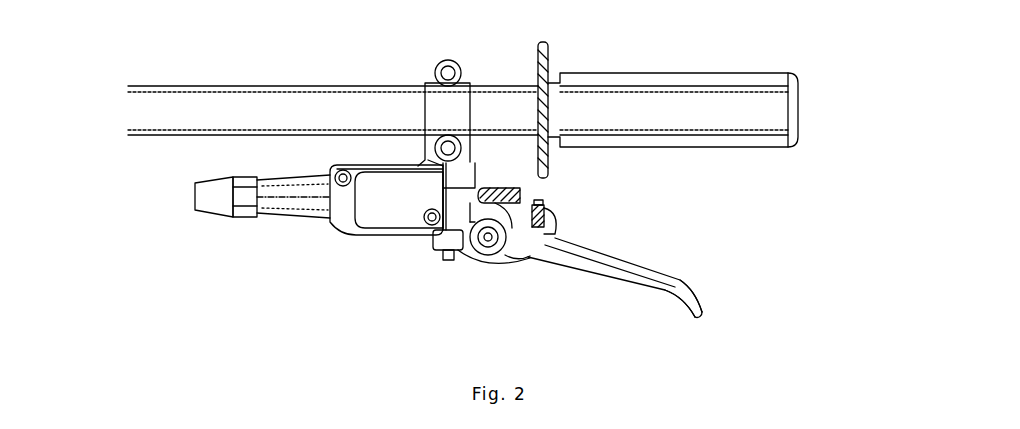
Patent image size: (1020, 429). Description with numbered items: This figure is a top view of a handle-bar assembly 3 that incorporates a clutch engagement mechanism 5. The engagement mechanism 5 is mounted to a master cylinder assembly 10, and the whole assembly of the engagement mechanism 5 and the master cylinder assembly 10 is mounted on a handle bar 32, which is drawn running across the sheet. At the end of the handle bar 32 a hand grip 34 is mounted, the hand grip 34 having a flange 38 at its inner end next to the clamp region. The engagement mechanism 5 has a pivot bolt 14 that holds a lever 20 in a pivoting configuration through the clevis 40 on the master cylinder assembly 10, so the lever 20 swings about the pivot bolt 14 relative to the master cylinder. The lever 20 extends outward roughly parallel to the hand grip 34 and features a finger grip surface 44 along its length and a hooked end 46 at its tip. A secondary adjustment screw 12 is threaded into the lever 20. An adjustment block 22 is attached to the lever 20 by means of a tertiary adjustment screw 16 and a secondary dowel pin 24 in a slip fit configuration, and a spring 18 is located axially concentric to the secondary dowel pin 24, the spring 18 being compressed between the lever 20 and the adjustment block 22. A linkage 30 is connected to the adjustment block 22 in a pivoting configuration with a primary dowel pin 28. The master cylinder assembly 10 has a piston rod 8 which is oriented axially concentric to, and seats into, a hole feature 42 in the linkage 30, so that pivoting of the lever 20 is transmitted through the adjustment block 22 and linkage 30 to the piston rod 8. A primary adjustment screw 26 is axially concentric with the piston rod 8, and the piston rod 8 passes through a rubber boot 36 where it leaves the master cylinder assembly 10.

The handle-bar assembly 3 is at (318, 255).
The engagement mechanism 5 is at (512, 270).
The piston rod 8 is at (421, 152).
The master cylinder assembly 10 is at (383, 238).
The secondary adjustment screw 12 is at (448, 262).
The pivot bolt 14 is at (462, 262).
The tertiary adjustment screw 16 is at (525, 262).
The spring 18 is at (560, 238).
The lever 20 is at (707, 312).
The adjustment block 22 is at (556, 225).
The secondary dowel pin 24 is at (545, 206).
The primary adjustment screw 26 is at (518, 190).
The primary dowel pin 28 is at (556, 148).
The linkage 30 is at (498, 192).
The handle bar 32 is at (222, 86).
The hand grip 34 is at (672, 73).
The rubber boot 36 is at (424, 86).
The flange 38 is at (549, 44).
The clevis 40 is at (509, 266).
The hole feature 42 is at (488, 192).
The finger grip surface 44 is at (618, 276).
The hooked end 46 is at (694, 290).